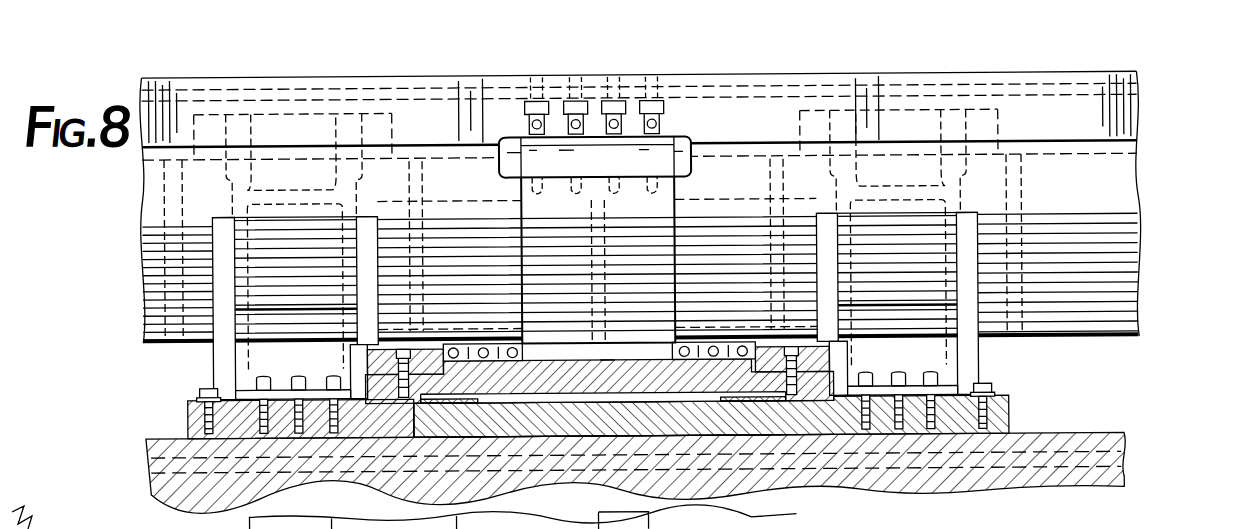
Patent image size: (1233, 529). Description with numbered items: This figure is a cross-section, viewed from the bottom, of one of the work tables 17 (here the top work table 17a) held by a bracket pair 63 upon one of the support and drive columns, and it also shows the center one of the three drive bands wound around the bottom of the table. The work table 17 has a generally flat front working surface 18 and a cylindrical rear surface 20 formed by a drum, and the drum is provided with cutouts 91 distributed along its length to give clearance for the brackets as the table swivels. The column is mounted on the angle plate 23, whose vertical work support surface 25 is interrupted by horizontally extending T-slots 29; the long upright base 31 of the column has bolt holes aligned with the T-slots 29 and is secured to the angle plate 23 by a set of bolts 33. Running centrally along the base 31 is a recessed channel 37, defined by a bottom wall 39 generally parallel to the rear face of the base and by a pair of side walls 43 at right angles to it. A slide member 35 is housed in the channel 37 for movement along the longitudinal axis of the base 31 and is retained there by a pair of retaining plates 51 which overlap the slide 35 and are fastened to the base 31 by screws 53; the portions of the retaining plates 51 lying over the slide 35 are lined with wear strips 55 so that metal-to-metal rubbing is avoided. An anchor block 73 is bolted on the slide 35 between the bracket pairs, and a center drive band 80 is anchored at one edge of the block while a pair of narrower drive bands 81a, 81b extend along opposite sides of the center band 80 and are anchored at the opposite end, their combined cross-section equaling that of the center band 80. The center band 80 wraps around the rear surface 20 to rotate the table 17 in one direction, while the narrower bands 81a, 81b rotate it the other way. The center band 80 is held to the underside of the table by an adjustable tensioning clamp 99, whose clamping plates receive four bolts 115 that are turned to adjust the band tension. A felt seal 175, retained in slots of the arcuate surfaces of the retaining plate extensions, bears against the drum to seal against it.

The work table 17 is at (1156, 82).
The top work table 17a is at (1008, 75).
The front working surface 18 is at (828, 75).
The cylindrical rear surface 20 is at (1122, 260).
The angle plate 23 is at (168, 490).
The work support surface 25 is at (166, 436).
The T-slots 29 is at (150, 462).
The base 31 is at (186, 403).
The bolts 33 is at (206, 388).
The slide member 35 is at (647, 380).
The channel 37 is at (713, 398).
The bottom wall 39 is at (557, 397).
The side walls 43 is at (410, 403).
The retaining plates 51 is at (371, 350).
The screws 53 is at (403, 346).
The wear strips 55 is at (791, 346).
The bracket pair 63 is at (596, 285).
The anchor block 73 is at (607, 357).
The center drive band 80 is at (677, 182).
The narrower drive band 81a is at (467, 343).
The narrower drive band 81b is at (703, 343).
The cutouts 91 is at (216, 326).
The adjustable tensioning clamp 99 is at (686, 128).
The bolts 115 is at (570, 95).
The felt seal 175 is at (436, 343).